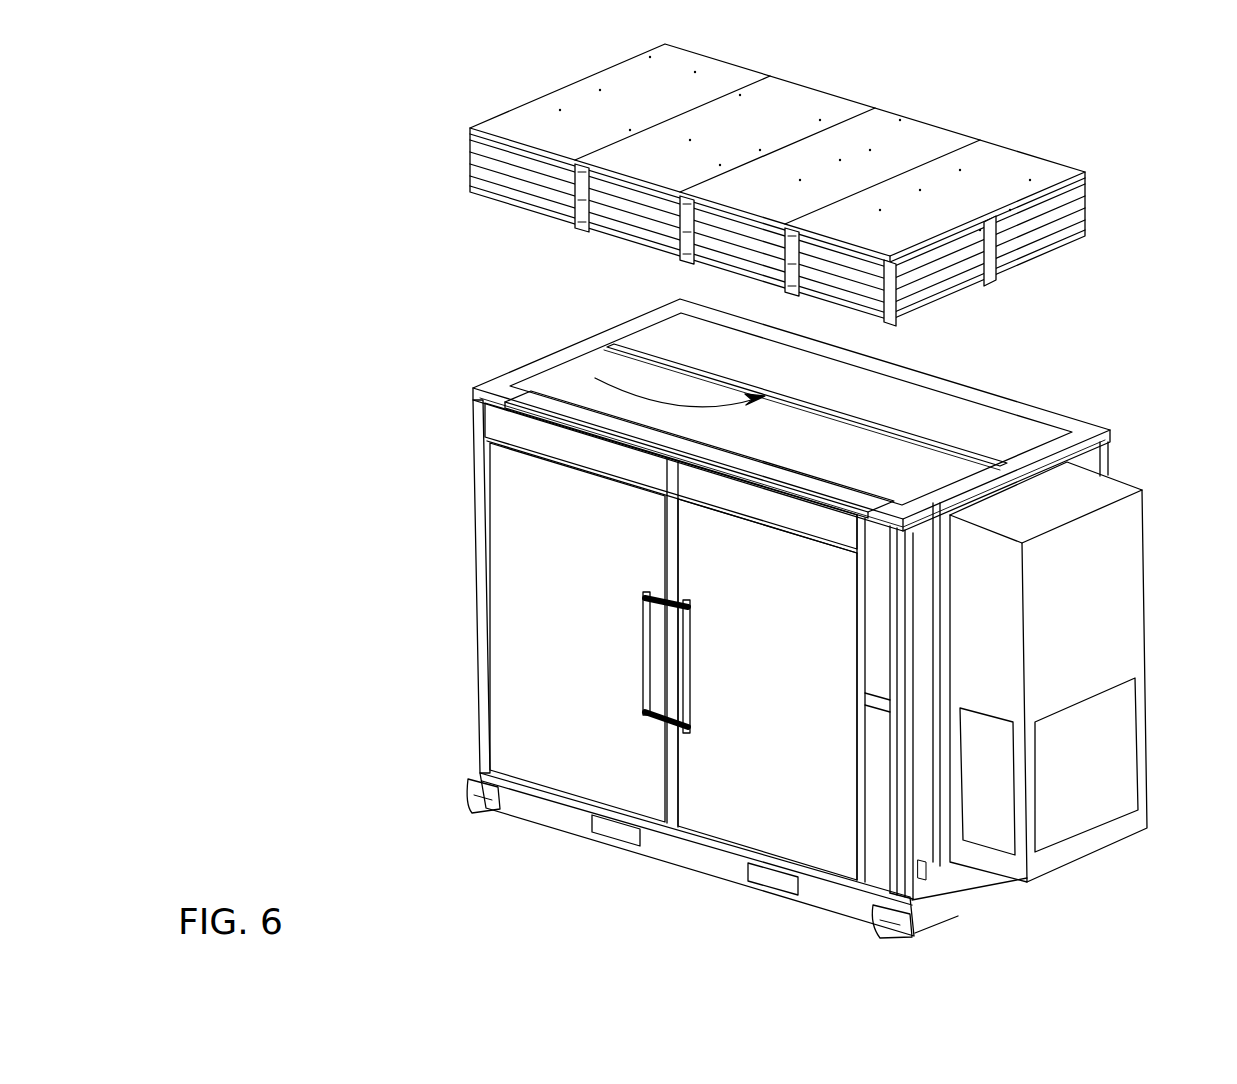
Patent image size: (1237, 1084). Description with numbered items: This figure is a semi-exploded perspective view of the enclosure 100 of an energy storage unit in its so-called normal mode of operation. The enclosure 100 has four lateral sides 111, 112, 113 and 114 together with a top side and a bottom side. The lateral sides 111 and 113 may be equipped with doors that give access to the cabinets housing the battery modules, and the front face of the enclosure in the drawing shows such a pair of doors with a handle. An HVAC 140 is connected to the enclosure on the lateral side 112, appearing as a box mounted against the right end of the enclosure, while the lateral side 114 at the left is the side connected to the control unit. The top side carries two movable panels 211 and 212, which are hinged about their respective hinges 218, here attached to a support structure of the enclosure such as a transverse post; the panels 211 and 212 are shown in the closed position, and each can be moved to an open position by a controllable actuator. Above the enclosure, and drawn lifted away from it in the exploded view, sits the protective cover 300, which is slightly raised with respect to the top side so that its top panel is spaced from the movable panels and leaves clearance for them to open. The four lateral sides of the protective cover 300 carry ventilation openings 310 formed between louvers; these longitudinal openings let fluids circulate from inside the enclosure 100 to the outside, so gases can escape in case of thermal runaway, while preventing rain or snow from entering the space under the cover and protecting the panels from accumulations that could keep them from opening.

The enclosure 100 is at (1154, 260).
The protective cover 300 is at (770, 105).
The ventilation openings 310 is at (515, 180).
The movable panel 211 is at (563, 380).
The movable panel 212 is at (990, 418).
The hinge 218 is at (567, 380).
The lateral side 111 is at (548, 440).
The lateral side 114 is at (478, 676).
The lateral side 112 is at (930, 848).
The lateral side 113 is at (1110, 456).
The HVAC 140 is at (1095, 600).